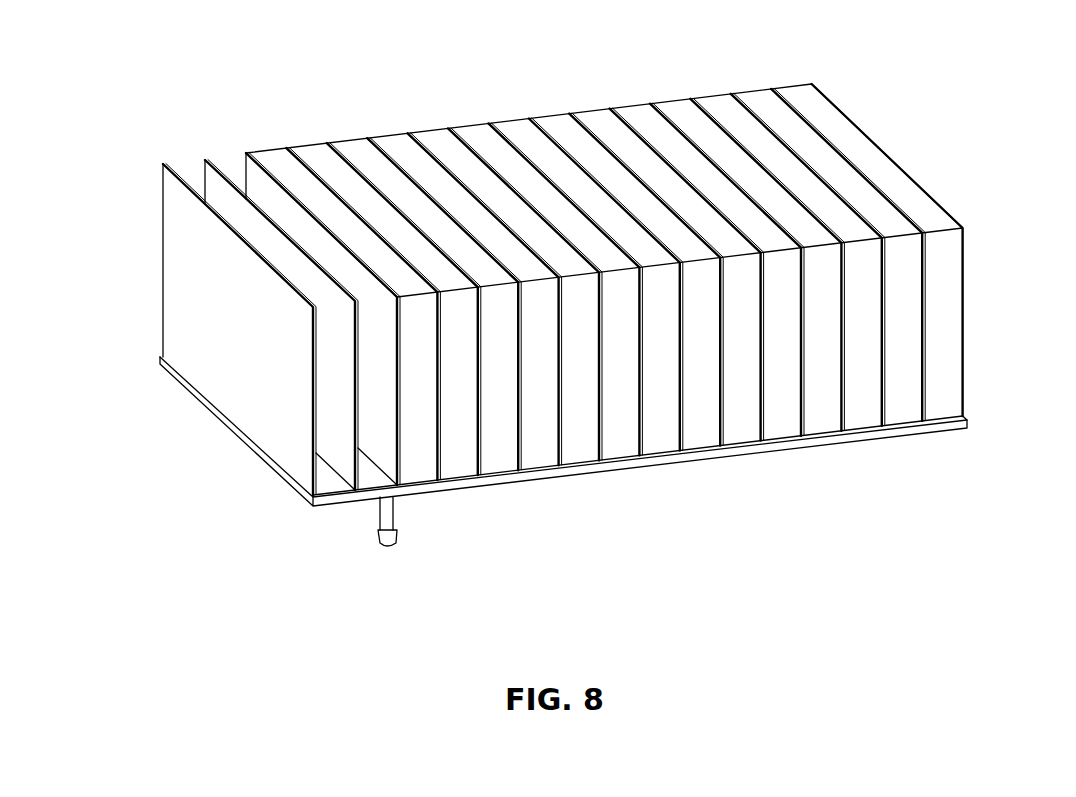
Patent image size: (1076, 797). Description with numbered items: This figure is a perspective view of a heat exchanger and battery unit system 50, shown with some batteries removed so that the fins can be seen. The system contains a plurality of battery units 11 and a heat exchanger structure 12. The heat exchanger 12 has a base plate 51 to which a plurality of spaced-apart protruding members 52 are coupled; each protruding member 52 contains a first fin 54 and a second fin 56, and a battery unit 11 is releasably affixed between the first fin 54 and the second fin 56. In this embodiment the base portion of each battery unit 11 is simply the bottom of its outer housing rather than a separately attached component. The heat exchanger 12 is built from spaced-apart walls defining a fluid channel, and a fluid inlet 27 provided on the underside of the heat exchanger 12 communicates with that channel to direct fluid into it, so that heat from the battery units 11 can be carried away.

The heat exchanger and battery unit system 50 is at (1000, 193).
The battery unit 11 is at (430, 132).
The second fin 56 is at (206, 160).
The protruding members 52 is at (193, 255).
The first fin 54 is at (163, 297).
The base plate 51 is at (373, 480).
The heat exchanger structure 12 is at (313, 505).
The fluid inlet 27 is at (378, 547).